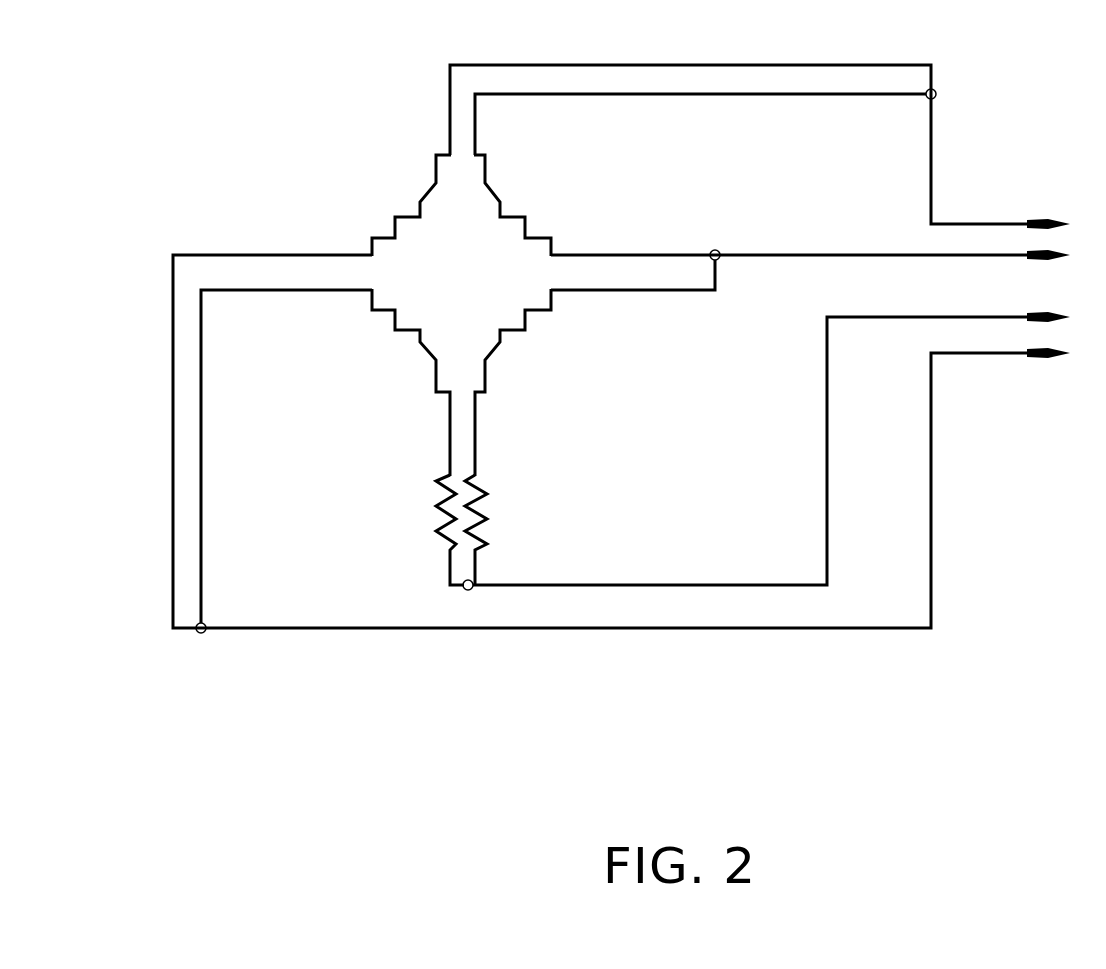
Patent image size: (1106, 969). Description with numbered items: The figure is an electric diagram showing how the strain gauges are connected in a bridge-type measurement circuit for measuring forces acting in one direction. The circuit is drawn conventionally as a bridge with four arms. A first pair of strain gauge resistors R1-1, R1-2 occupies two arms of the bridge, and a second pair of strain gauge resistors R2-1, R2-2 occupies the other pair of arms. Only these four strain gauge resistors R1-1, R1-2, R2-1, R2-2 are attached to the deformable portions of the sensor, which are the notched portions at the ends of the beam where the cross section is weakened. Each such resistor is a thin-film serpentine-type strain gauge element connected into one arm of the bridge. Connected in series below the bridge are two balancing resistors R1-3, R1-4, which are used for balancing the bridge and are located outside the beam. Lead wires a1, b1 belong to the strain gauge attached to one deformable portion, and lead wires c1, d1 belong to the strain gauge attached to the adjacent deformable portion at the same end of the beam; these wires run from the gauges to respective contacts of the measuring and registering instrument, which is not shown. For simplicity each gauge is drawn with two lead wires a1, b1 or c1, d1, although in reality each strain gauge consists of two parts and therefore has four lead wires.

The strain gauge resistor R1-1 is at (360, 205).
The strain gauge resistor R1-2 is at (563, 205).
The strain gauge resistor R2-1 is at (361, 382).
The strain gauge resistor R2-2 is at (570, 382).
The balancing resistor R1-3 is at (368, 530).
The balancing resistor R1-4 is at (766, 451).
The lead wire a1 is at (760, 117).
The lead wire b1 is at (582, 444).
The lead wire c1 is at (705, 122).
The lead wire d1 is at (810, 248).